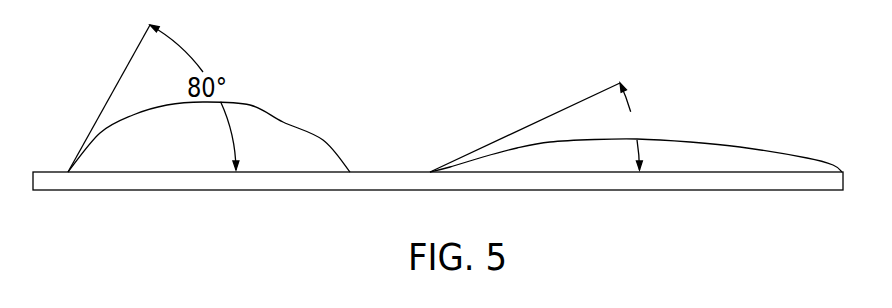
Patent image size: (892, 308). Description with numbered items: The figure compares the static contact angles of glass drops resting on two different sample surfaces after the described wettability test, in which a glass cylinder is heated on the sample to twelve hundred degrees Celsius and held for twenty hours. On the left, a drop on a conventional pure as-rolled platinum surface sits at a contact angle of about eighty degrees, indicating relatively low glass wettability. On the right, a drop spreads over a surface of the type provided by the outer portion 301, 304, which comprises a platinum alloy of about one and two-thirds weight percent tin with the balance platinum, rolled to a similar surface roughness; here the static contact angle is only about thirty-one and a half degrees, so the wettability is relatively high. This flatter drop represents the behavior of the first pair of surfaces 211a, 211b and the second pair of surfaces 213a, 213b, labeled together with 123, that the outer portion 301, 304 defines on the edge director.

The first pair of surfaces 211a is at (636, 110).
The first pair of surfaces 211b is at (636, 110).
The second pair of surfaces 213a is at (636, 110).
The second pair of surfaces 213b is at (636, 110).
The film stack 123 is at (687, 170).
The outer portion 301 is at (438, 207).
The substrate surface 304 is at (687, 190).